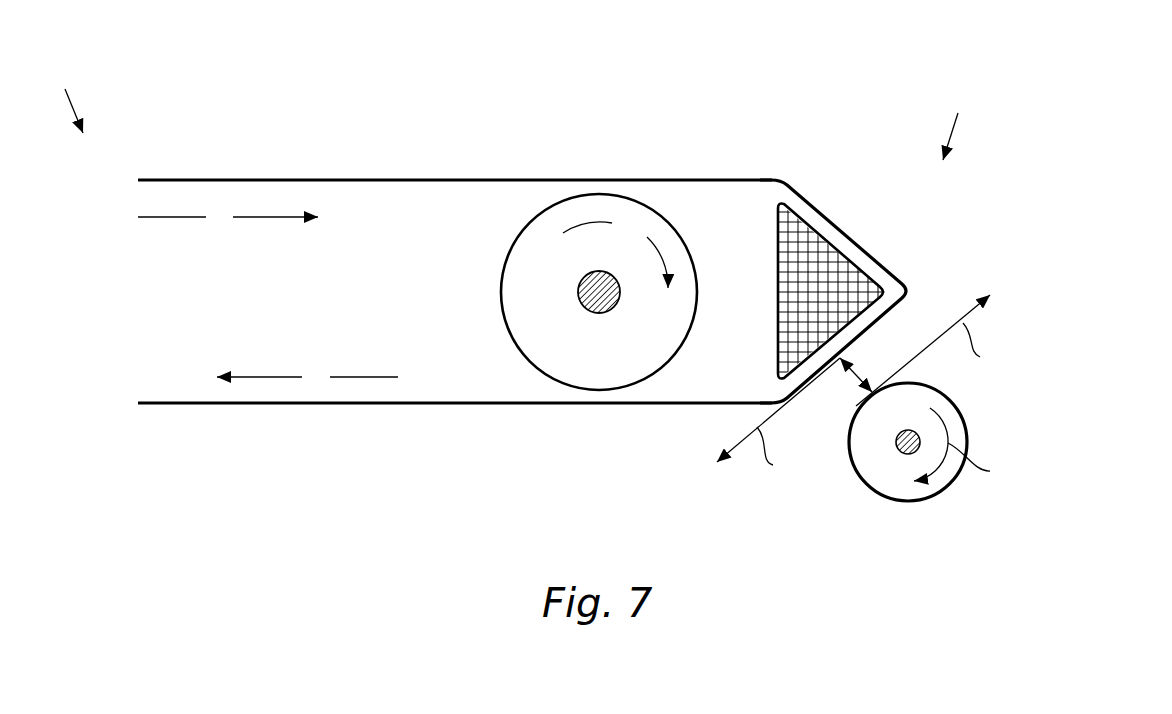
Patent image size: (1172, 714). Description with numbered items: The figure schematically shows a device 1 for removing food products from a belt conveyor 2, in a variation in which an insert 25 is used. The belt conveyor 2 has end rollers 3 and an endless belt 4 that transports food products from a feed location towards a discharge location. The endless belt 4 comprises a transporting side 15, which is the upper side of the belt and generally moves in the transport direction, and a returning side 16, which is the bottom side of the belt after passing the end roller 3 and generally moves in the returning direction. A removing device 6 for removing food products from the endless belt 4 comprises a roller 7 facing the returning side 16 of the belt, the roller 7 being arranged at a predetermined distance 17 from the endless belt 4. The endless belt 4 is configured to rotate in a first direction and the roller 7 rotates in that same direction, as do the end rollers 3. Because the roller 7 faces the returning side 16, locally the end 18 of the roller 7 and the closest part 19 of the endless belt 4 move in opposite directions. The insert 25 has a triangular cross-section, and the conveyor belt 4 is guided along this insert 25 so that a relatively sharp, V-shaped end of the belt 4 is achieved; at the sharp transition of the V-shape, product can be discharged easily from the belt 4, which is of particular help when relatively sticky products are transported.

The device 1 is at (1070, 146).
The belt conveyor 2 is at (700, 160).
The end roller 3 is at (518, 291).
The endless belt 4 is at (160, 178).
The removing device 6 is at (991, 423).
The roller 7 is at (884, 474).
The transporting side 15 is at (413, 178).
The returning side 16 is at (412, 405).
The predetermined distance 17 is at (858, 384).
The end of the roller 18 is at (872, 393).
The closest part of the endless belt 19 is at (846, 352).
The insert 25 is at (818, 267).